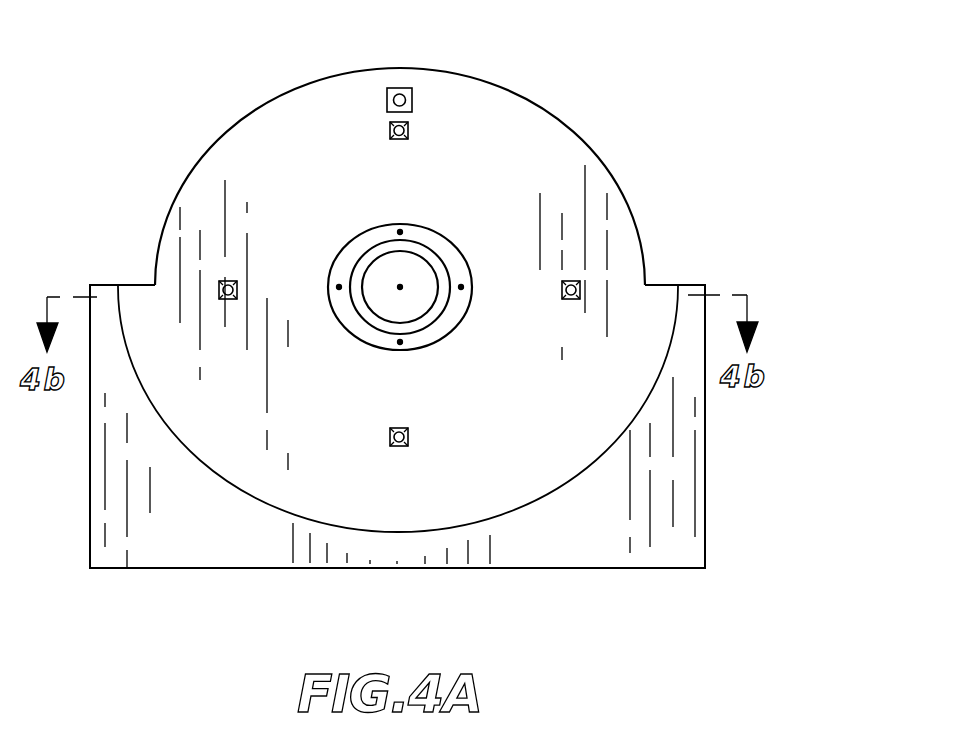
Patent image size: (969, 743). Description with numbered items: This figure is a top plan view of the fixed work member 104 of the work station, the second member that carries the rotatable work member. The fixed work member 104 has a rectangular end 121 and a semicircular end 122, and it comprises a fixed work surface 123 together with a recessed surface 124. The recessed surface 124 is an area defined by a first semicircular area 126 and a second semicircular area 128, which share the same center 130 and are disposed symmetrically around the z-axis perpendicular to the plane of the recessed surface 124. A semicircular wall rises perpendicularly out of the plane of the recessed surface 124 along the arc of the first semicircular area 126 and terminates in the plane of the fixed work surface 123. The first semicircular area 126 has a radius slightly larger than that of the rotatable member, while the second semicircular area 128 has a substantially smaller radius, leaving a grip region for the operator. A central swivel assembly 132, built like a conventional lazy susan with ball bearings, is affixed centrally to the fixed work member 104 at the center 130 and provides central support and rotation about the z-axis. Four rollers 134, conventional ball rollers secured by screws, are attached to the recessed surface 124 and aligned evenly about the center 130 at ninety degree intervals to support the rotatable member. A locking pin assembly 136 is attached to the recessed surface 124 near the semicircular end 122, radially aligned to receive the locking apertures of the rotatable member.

The fixed work member 104 is at (698, 250).
The rectangular end 121 is at (390, 578).
The semicircular end 122 is at (213, 87).
The fixed work surface 123 is at (673, 550).
The recessed surface 124 is at (517, 245).
The first semicircular area 126 is at (418, 399).
The second semicircular area 128 is at (419, 188).
The center 130 is at (387, 300).
The central swivel assembly 132 is at (438, 243).
The rollers 134 is at (410, 129).
The locking pin assembly 136 is at (412, 100).